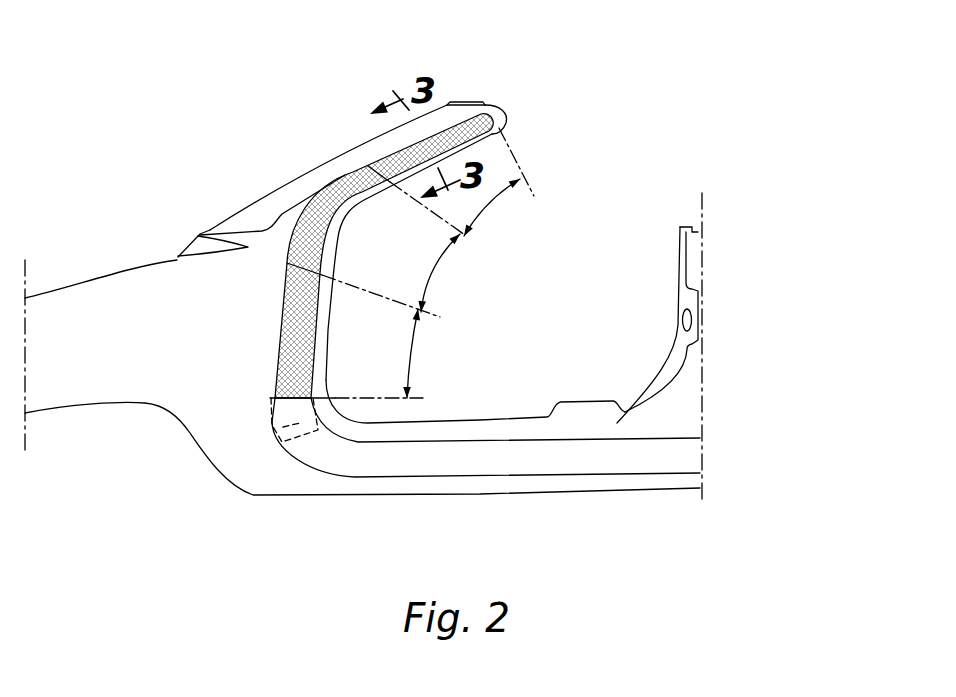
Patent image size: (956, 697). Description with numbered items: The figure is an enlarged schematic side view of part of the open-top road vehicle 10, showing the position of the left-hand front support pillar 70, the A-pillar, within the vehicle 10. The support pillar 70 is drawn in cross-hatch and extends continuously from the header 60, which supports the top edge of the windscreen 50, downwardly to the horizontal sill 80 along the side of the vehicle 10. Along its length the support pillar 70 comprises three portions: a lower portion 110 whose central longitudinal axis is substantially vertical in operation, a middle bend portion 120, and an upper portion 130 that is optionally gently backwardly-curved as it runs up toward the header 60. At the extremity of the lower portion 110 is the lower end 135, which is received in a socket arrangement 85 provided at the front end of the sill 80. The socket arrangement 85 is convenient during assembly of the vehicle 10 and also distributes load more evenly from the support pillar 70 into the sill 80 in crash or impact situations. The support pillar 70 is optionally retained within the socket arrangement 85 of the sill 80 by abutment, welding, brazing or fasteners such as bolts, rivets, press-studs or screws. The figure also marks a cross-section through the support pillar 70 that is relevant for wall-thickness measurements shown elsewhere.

The vehicle 10 is at (257, 43).
The windscreen 50 is at (297, 193).
The header 60 is at (505, 116).
The support pillar 70 is at (341, 167).
The sill 80 is at (438, 462).
The socket arrangement 85 is at (323, 452).
The lower portion 110 is at (412, 354).
The middle bend portion 120 is at (438, 272).
The upper portion 130 is at (490, 202).
The lower end 135 is at (271, 422).